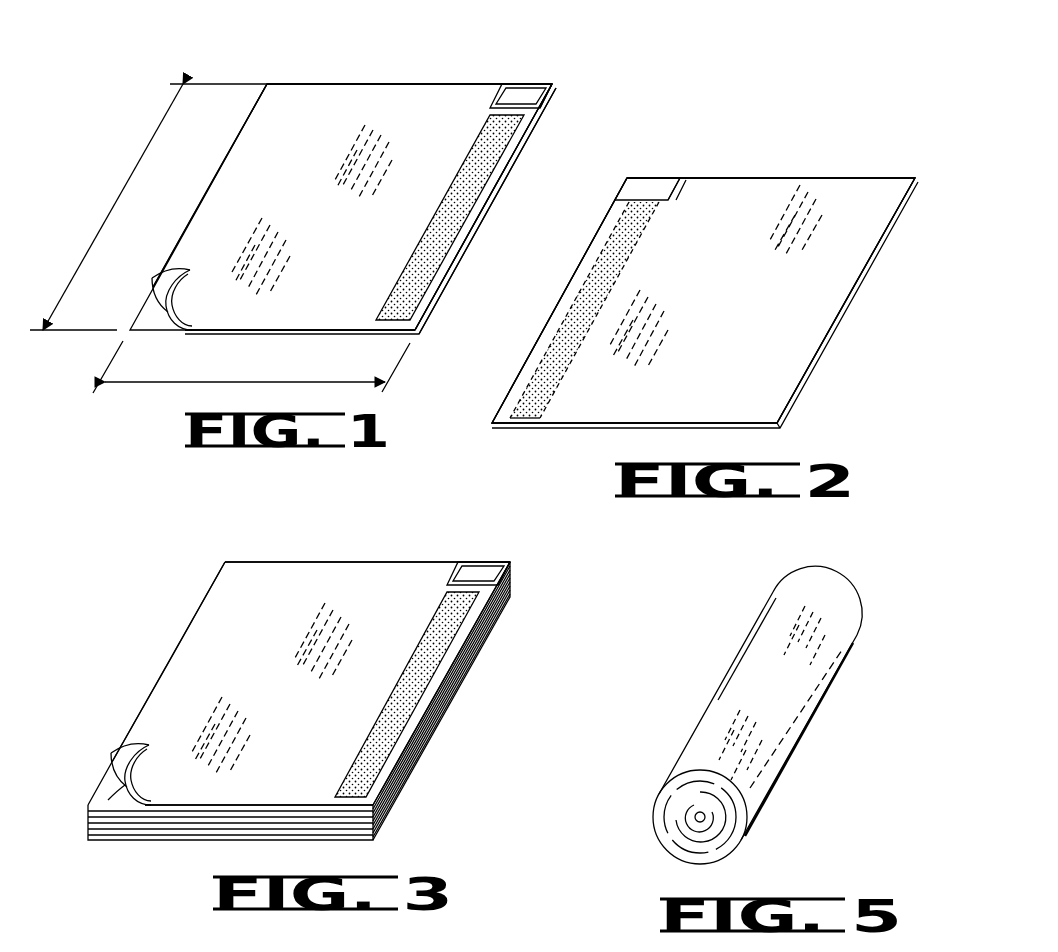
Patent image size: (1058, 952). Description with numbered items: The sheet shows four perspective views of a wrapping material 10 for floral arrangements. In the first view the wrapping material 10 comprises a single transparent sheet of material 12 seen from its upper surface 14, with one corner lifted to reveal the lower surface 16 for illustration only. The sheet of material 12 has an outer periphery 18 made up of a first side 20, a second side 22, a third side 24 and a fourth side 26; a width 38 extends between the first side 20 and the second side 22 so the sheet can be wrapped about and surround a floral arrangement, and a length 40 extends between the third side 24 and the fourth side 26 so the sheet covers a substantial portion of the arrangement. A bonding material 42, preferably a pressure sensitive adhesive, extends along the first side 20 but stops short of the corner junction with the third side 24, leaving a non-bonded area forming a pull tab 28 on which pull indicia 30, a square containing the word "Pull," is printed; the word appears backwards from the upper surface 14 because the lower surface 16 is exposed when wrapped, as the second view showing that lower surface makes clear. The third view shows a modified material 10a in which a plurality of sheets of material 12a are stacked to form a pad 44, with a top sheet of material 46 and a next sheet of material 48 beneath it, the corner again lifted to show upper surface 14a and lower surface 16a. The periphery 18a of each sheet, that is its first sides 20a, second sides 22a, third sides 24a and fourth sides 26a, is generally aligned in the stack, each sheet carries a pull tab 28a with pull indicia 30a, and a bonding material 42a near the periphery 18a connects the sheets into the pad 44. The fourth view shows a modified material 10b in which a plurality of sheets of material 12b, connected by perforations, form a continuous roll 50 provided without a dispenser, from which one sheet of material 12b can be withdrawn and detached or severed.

In FIG. 1, the wrapping material 10 is at (253, 40).
In FIG. 2, the wrapping material 10 is at (812, 97).
In FIG. 1, the sheet of material 12 is at (383, 80).
In FIG. 2, the sheet of material 12 is at (866, 178).
In FIG. 1, the upper surface 14 is at (283, 96).
In FIG. 1, the lower surface 16 is at (158, 282).
In FIG. 2, the lower surface 16 is at (793, 192).
In FIG. 1, the outer periphery 18 is at (218, 203).
In FIG. 2, the outer periphery 18 is at (828, 336).
In FIG. 1, the first side 20 is at (503, 177).
In FIG. 2, the first side 20 is at (556, 298).
In FIG. 1, the second side 22 is at (183, 240).
In FIG. 2, the second side 22 is at (866, 272).
In FIG. 1, the third side 24 is at (298, 84).
In FIG. 2, the third side 24 is at (726, 178).
In FIG. 1, the fourth side 26 is at (238, 334).
In FIG. 2, the fourth side 26 is at (586, 426).
In FIG. 1, the pull tab 28 is at (553, 87).
In FIG. 2, the pull tab 28 is at (660, 183).
In FIG. 1, the pull indicia 30 is at (528, 90).
In FIG. 2, the pull indicia 30 is at (636, 184).
In FIG. 1, the width 38 is at (183, 384).
In FIG. 1, the length 40 is at (123, 190).
In FIG. 1, the bonding material 42 is at (446, 239).
In FIG. 2, the bonding material 42 is at (548, 372).
In FIG. 3, the modified material 10a is at (210, 518).
In FIG. 3, the sheet of material 12a is at (342, 560).
In FIG. 3, the upper surface 14a is at (172, 693).
In FIG. 3, the lower surface 16a is at (118, 753).
In FIG. 3, the periphery 18a is at (185, 632).
In FIG. 3, the first side 20a is at (462, 657).
In FIG. 3, the second side 22a is at (137, 710).
In FIG. 3, the third side 24a is at (263, 562).
In FIG. 3, the fourth side 26a is at (200, 800).
In FIG. 3, the pull tab 28a is at (485, 562).
In FIG. 3, the pull indicia 30a is at (506, 562).
In FIG. 3, the bonding material 42a is at (397, 722).
In FIG. 3, the pad 44 is at (388, 788).
In FIG. 3, the top sheet of material 46 is at (225, 628).
In FIG. 3, the next sheet of material 48 is at (108, 800).
In FIG. 5, the modified material 10b is at (690, 592).
In FIG. 5, the sheet of material 12b is at (730, 660).
In FIG. 5, the roll 50 is at (722, 700).